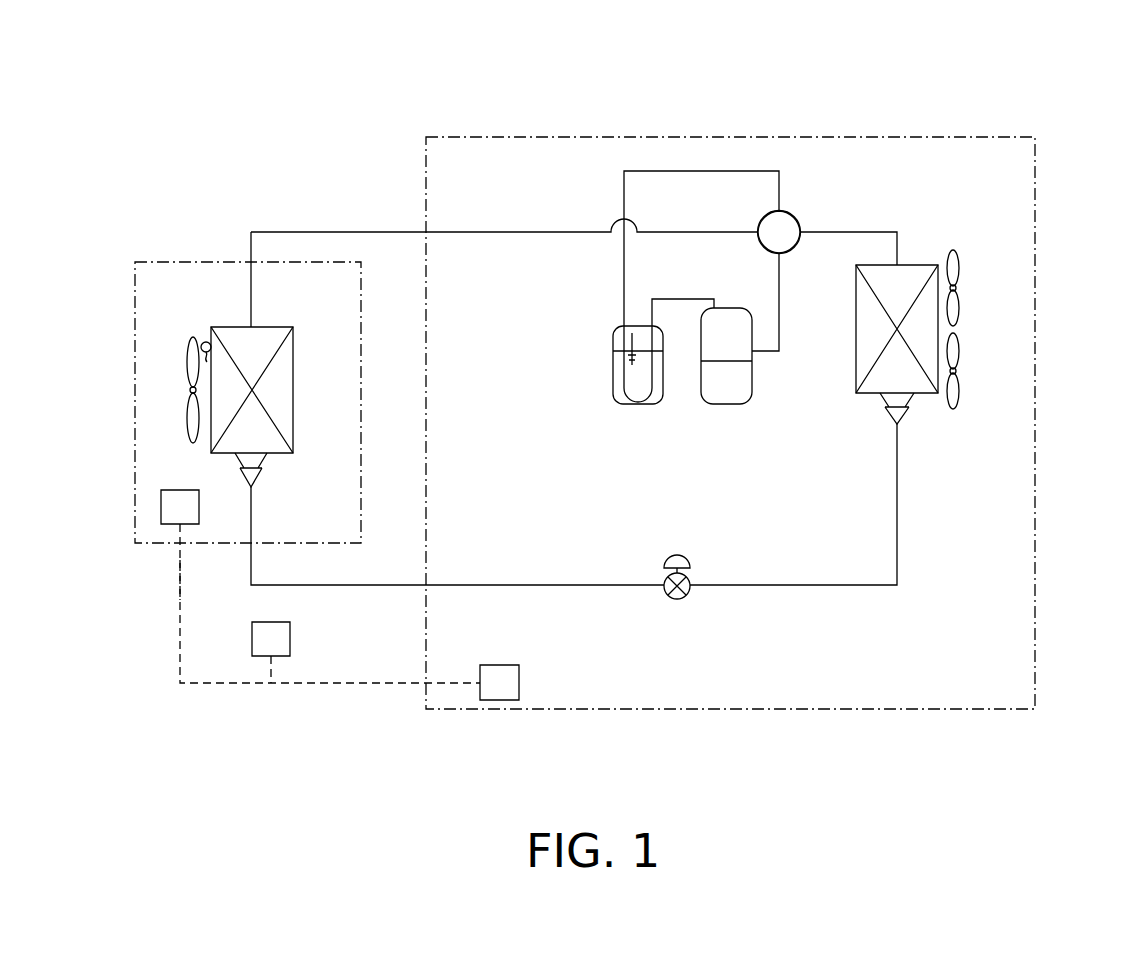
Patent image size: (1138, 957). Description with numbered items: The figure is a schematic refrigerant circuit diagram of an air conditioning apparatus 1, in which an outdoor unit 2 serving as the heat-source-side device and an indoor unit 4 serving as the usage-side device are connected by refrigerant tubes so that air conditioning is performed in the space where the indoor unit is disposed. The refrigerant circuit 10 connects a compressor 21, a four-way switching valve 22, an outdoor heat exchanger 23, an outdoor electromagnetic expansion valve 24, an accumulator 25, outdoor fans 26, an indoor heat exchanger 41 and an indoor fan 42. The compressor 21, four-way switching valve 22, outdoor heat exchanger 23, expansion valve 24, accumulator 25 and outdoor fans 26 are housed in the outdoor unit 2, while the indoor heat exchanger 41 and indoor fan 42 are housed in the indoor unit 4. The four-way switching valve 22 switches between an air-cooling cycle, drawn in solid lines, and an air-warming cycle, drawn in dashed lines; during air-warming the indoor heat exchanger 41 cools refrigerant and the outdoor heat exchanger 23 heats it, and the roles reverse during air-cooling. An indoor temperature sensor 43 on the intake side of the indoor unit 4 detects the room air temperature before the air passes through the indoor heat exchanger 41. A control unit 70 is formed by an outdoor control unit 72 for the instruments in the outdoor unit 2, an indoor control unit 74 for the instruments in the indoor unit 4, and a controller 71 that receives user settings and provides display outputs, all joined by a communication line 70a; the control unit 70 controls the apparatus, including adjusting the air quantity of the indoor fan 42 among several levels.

The air conditioning apparatus 1 is at (1060, 101).
The outdoor unit 2 is at (1006, 137).
The indoor unit 4 is at (153, 262).
The refrigerant circuit 10 is at (382, 177).
The compressor 21 is at (726, 404).
The four-way switching valve 22 is at (795, 221).
The outdoor heat exchanger 23 is at (856, 325).
The outdoor electromagnetic expansion valve 24 is at (677, 599).
The accumulator 25 is at (633, 404).
The outdoor fans 26 is at (960, 310).
The indoor heat exchanger 41 is at (293, 388).
The indoor fan 42 is at (192, 420).
The indoor temperature sensor 43 is at (205, 342).
The control unit 70 is at (170, 652).
The communication line 70a is at (179, 578).
The controller 71 is at (290, 640).
The outdoor control unit 72 is at (519, 682).
The indoor control unit 74 is at (161, 505).